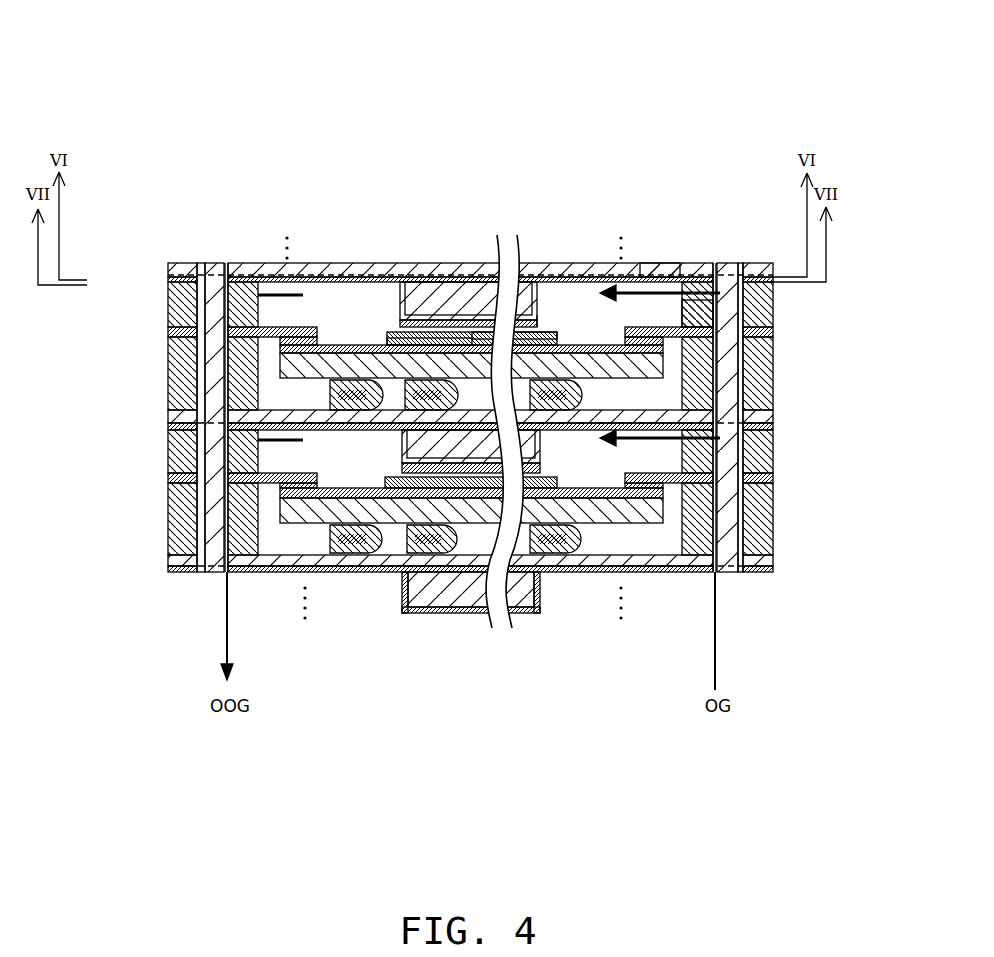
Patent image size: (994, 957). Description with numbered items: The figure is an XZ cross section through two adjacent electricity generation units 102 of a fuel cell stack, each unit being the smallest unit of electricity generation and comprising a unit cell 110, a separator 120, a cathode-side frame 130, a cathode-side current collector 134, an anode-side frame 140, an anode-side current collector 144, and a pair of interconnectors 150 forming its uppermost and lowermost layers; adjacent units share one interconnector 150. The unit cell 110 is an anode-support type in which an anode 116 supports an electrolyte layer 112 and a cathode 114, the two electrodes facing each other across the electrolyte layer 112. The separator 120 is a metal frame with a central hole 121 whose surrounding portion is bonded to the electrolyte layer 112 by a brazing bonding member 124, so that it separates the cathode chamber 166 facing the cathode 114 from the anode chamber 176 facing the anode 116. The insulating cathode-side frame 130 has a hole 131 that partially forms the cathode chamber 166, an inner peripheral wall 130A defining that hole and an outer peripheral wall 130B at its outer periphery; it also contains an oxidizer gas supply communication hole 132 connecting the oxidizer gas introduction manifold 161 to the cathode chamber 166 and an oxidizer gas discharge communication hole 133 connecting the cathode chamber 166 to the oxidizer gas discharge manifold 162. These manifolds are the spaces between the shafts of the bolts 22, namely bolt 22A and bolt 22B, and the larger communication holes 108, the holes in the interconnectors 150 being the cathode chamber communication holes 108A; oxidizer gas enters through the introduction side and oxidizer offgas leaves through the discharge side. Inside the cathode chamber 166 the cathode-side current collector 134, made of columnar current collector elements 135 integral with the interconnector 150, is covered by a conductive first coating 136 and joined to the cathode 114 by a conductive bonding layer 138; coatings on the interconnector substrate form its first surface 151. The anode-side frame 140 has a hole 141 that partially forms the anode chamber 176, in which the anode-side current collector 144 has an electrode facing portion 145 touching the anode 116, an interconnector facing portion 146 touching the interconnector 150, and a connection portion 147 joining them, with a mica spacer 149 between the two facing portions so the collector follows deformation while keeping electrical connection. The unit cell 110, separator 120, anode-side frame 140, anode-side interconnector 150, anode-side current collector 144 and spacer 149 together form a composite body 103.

The bolt 22 is at (441, 356).
The bolt 22A is at (727, 270).
The bolt 22B is at (212, 272).
The electricity generation unit 102 is at (96, 268).
The composite body 103 is at (787, 330).
The communication hole 108 is at (467, 631).
The cathode chamber communication hole 108A is at (200, 272).
The unit cell 110 is at (418, 239).
The electrolyte layer 112 is at (342, 343).
The cathode 114 is at (378, 333).
The anode 116 is at (330, 340).
The separator 120 is at (442, 409).
The hole 121 is at (318, 478).
The bonding member 124 is at (270, 350).
The cathode-side frame 130 is at (475, 377).
The inner peripheral wall 130A is at (688, 316).
The outer peripheral wall 130B is at (775, 298).
The hole 131 is at (258, 455).
The oxidizer gas supply communication hole 132 is at (700, 290).
The oxidizer gas discharge communication hole 133 is at (267, 388).
The cathode-side current collector 134 is at (499, 337).
The current collector element 135 is at (499, 337).
The first coating 136 is at (548, 326).
The bonding layer 138 is at (540, 325).
The anode-side frame 140 is at (172, 384).
The hole 141 is at (258, 545).
The anode-side current collector 144 is at (445, 647).
The electrode facing portion 145 is at (392, 580).
The interconnector facing portion 146 is at (420, 582).
The connection portion 147 is at (471, 622).
The spacer 149 is at (335, 555).
The interconnector 150 is at (168, 270).
The first surface 151 is at (652, 274).
The oxidizer gas introduction manifold 161 is at (741, 574).
The oxidizer gas discharge manifold 162 is at (200, 574).
The cathode chamber 166 is at (552, 465).
The anode chamber 176 is at (597, 550).